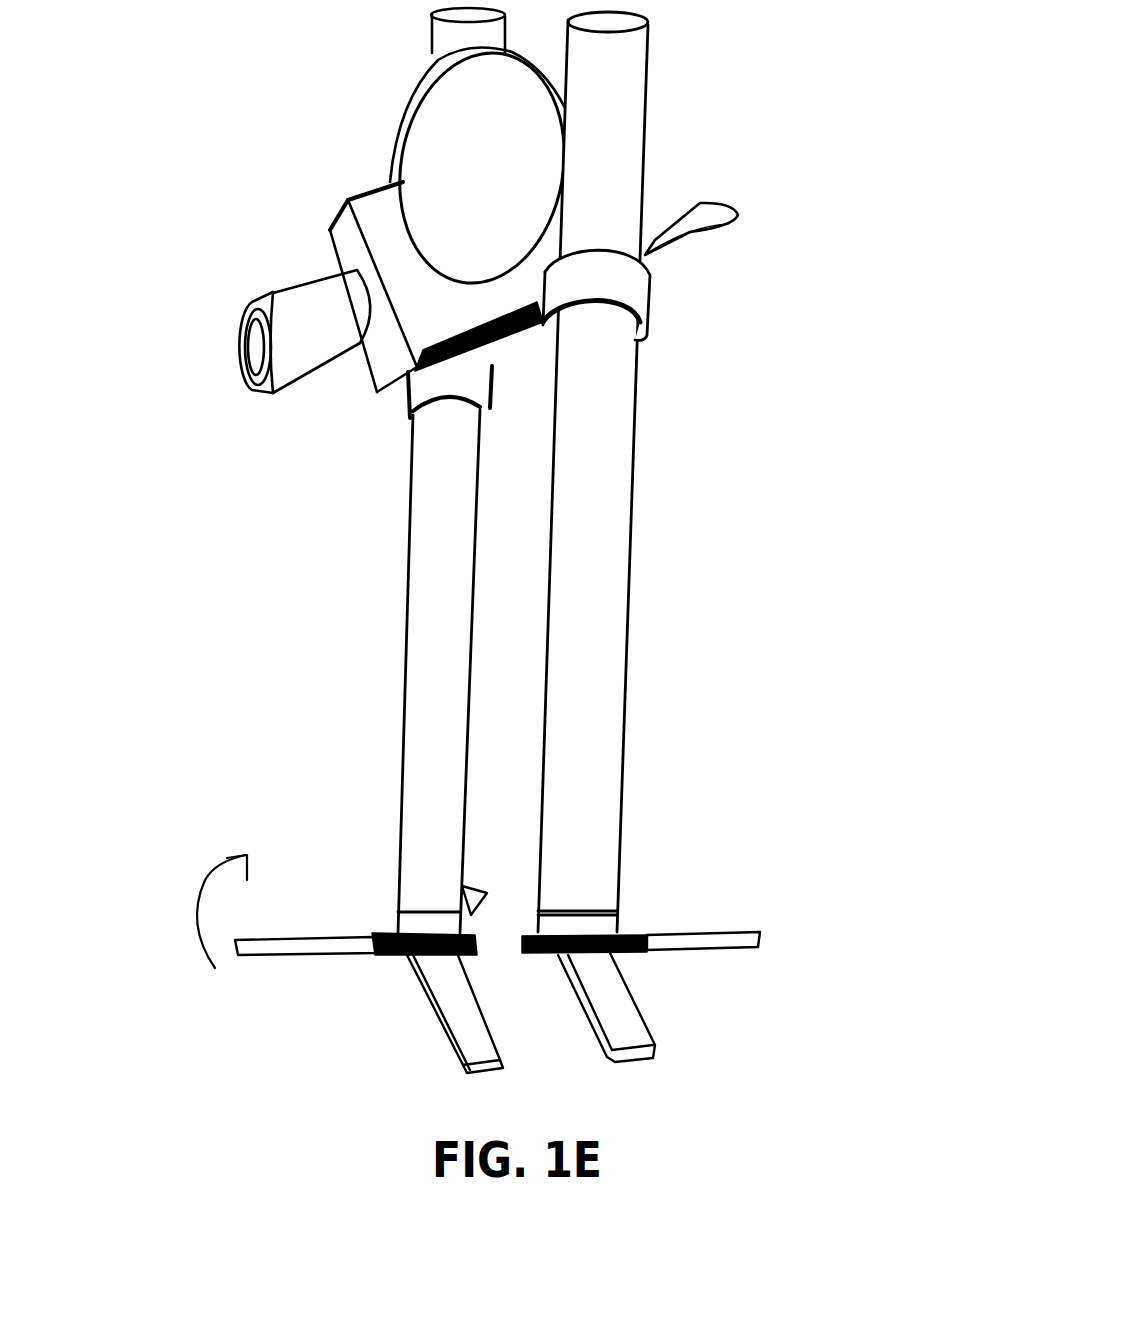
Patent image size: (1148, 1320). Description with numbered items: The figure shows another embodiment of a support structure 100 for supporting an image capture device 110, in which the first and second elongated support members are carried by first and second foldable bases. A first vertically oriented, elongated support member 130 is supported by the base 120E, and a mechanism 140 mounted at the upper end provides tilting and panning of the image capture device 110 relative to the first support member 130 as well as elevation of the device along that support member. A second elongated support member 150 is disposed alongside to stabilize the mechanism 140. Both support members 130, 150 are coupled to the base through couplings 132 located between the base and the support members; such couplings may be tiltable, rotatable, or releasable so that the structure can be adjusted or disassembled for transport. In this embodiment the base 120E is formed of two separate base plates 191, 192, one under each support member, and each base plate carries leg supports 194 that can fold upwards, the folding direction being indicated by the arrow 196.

The support structure 100 is at (498, 540).
The image capture device 110 is at (340, 217).
The first elongated support member 130 is at (623, 473).
The mechanism 140 is at (518, 373).
The second elongated support member 150 is at (415, 610).
The couplings 132 is at (366, 932).
The base plate 191 is at (373, 935).
The base plate 192 is at (633, 927).
The leg supports 194 is at (460, 1063).
The arrow 196 is at (195, 930).
The base 120E is at (498, 835).